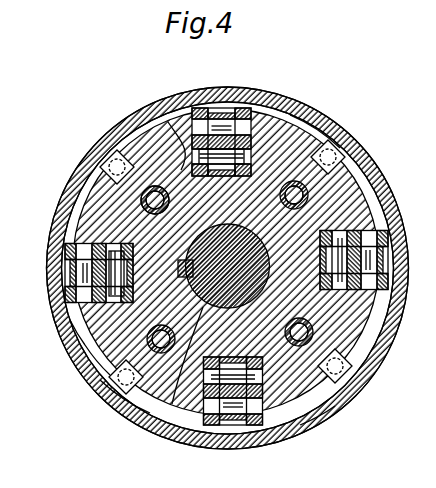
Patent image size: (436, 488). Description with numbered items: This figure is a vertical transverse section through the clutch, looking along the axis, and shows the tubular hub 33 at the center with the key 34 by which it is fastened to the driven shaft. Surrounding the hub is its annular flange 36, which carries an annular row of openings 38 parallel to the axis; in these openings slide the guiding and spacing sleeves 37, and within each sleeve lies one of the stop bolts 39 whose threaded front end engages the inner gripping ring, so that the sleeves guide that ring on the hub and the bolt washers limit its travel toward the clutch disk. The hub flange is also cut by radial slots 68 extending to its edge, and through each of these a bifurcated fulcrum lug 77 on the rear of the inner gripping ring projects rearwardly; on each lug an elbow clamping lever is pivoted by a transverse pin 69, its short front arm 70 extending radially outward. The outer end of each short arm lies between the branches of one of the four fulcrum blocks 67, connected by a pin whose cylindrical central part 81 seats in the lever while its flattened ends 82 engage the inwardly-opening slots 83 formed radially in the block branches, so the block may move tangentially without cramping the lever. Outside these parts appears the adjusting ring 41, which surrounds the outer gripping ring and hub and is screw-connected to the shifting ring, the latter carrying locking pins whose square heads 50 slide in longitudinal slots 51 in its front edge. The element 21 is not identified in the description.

The housing 21 is at (373, 166).
The hub 33 is at (153, 423).
The key 34 is at (105, 360).
The annular flange 36 is at (317, 423).
The guiding and spacing sleeves 37 is at (150, 186).
The openings 38 is at (141, 200).
The stop bolts 39 is at (294, 181).
The adjusting ring 41 is at (296, 113).
The square head 50 is at (105, 155).
The longitudinal slot 51 is at (128, 413).
The fulcrum blocks 67 is at (251, 107).
The radial slot 68 is at (275, 421).
The transverse pin 69 is at (281, 124).
The short front arm 70 is at (218, 107).
The bifurcated fulcrum lugs 77 is at (168, 122).
The cylindrical central part 81 is at (75, 278).
The flattened ends 82 is at (72, 250).
The inwardly-opening slots 83 is at (85, 330).